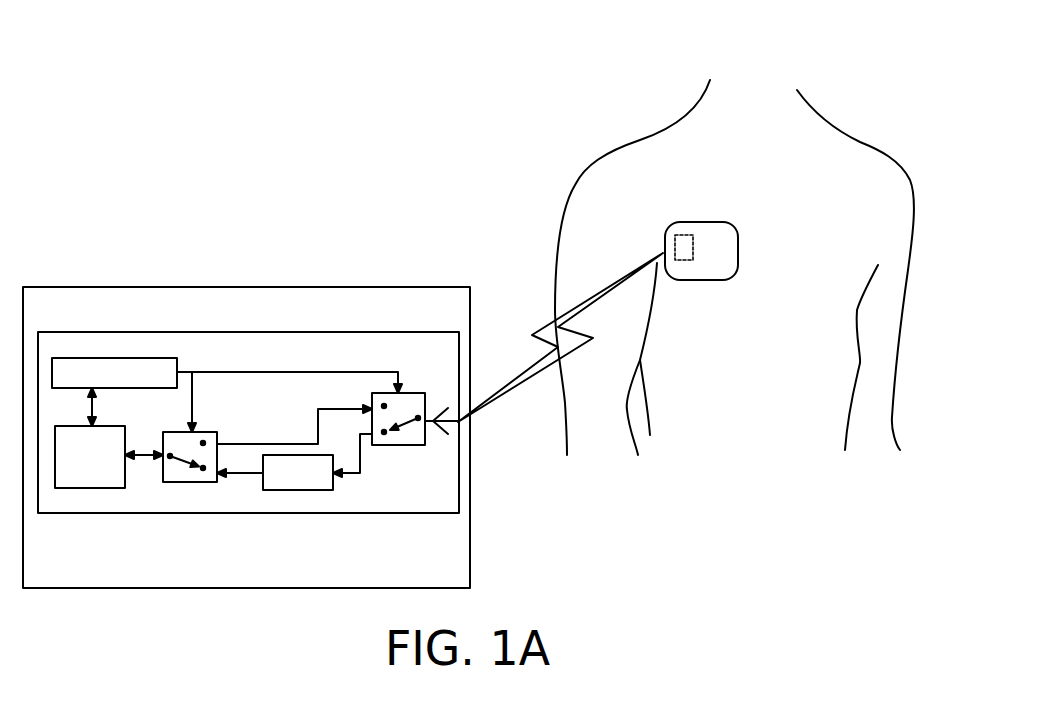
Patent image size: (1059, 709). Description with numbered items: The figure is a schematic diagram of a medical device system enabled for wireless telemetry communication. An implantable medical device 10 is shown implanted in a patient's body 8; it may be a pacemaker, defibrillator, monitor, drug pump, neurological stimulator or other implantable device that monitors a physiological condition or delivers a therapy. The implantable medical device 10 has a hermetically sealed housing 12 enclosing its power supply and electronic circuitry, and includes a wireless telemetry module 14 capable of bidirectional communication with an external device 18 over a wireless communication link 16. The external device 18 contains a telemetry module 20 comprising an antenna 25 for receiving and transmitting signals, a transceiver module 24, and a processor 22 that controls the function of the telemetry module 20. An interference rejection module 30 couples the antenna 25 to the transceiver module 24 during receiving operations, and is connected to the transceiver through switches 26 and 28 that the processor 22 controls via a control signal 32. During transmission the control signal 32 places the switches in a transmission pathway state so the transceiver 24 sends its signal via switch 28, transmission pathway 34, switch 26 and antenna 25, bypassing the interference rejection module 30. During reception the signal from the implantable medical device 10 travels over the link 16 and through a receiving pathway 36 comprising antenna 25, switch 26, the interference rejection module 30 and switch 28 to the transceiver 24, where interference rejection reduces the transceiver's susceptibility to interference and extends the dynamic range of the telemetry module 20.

The patient's body 8 is at (848, 137).
The implantable medical device 10 is at (697, 222).
The hermetically sealed housing 12 is at (687, 280).
The wireless telemetry module 14 is at (693, 250).
The wireless communication link 16 is at (517, 377).
The external device 18 is at (175, 262).
The telemetry module 20 is at (405, 332).
The processor 22 is at (142, 358).
The transceiver module 24 is at (75, 488).
The antenna 25 is at (449, 425).
The switch 26 is at (383, 445).
The switch 28 is at (178, 482).
The interference rejection module 30 is at (282, 490).
The control signal 32 is at (312, 372).
The transmission pathway 34 is at (293, 444).
The receiving pathway 36 is at (352, 506).